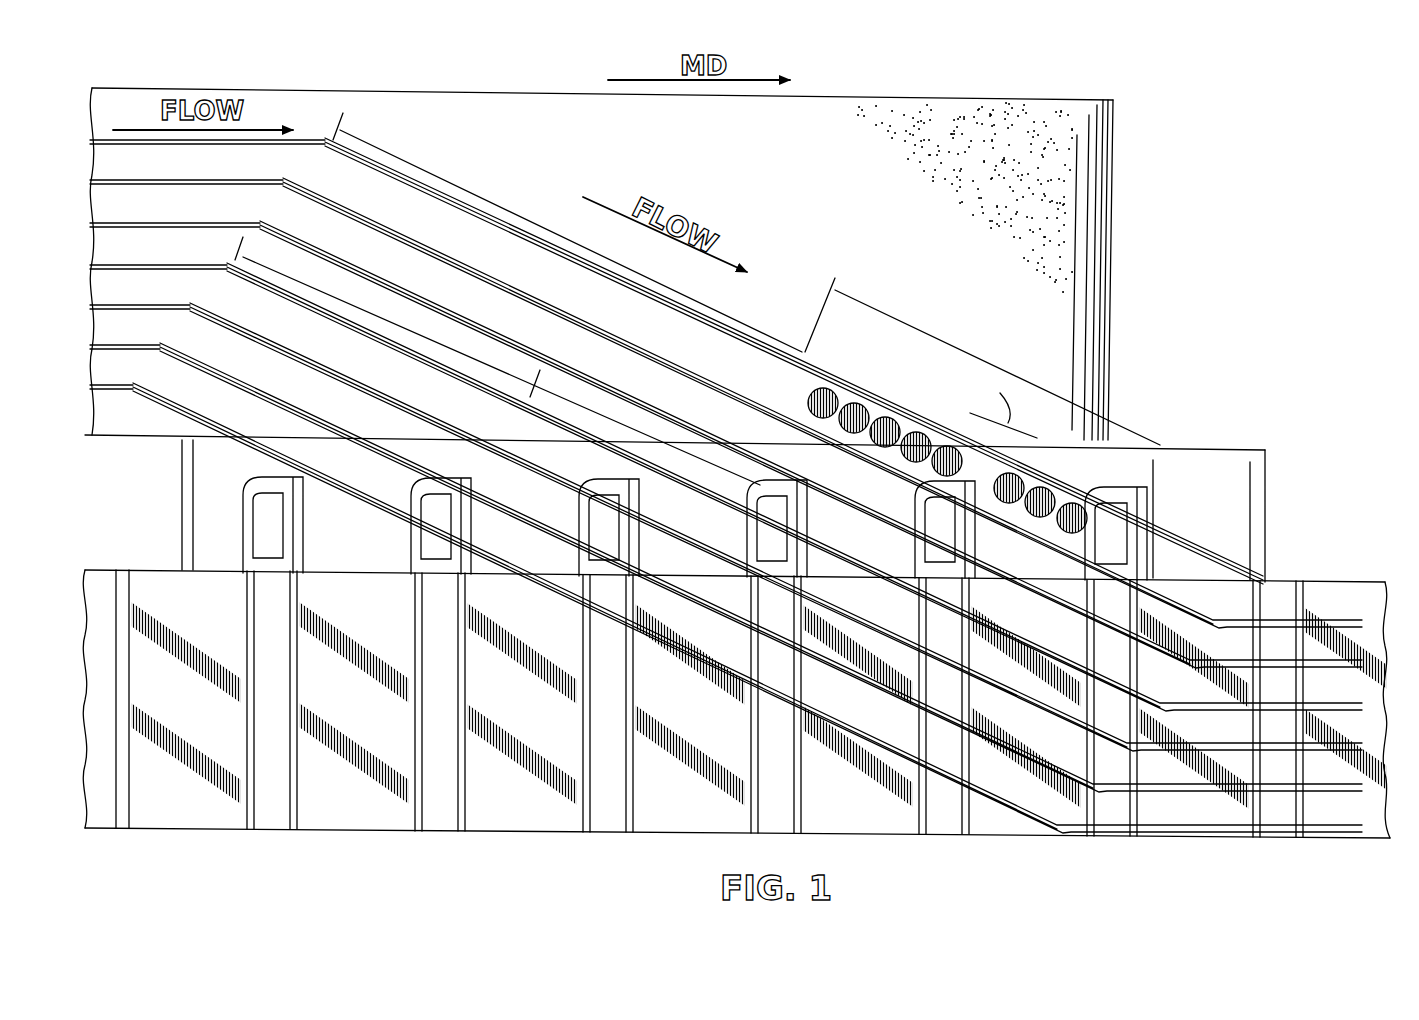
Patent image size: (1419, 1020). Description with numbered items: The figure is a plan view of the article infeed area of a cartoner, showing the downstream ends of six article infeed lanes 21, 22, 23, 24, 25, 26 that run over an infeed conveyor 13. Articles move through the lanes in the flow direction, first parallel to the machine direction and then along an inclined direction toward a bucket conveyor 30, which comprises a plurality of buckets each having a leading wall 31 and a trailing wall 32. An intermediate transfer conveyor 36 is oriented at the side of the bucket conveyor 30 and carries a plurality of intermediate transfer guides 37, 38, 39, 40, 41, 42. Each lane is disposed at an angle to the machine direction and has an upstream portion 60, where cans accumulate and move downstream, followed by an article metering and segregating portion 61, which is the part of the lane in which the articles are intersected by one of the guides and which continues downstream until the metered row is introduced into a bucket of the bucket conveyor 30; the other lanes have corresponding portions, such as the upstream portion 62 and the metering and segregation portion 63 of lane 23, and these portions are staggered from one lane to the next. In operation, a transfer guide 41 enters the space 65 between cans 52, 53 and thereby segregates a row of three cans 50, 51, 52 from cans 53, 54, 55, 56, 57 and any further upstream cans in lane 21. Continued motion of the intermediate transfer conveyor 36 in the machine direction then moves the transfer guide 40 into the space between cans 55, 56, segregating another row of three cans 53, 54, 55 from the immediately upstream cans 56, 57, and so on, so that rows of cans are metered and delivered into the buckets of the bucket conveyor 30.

The infeed conveyor 13 is at (810, 206).
The article infeed lane 21 is at (210, 176).
The article infeed lane 22 is at (195, 218).
The article infeed lane 23 is at (178, 259).
The article infeed lane 24 is at (168, 300).
The article infeed lane 25 is at (142, 340).
The article infeed lane 26 is at (127, 381).
The bucket conveyor 30 is at (112, 568).
The leading wall 31 is at (245, 643).
The trailing wall 32 is at (133, 813).
The intermediate transfer conveyor 36 is at (343, 534).
The intermediate transfer guide 37 is at (257, 493).
The intermediate transfer guide 38 is at (412, 553).
The intermediate transfer guide 39 is at (562, 560).
The intermediate transfer guide 40 is at (838, 565).
The intermediate transfer guide 41 is at (978, 530).
The intermediate transfer guide 42 is at (1153, 488).
The can 50 is at (1078, 503).
The can 51 is at (1045, 487).
The can 52 is at (1013, 473).
The can 53 is at (945, 445).
The can 54 is at (915, 431).
The can 55 is at (885, 416).
The can 56 is at (853, 402).
The can 57 is at (820, 387).
The upstream portion 60 is at (794, 357).
The article metering and segregating portion 61 is at (997, 367).
The upstream portion 62 is at (501, 371).
The article metering and segregation portion 63 is at (886, 533).
The space 65 is at (1003, 406).